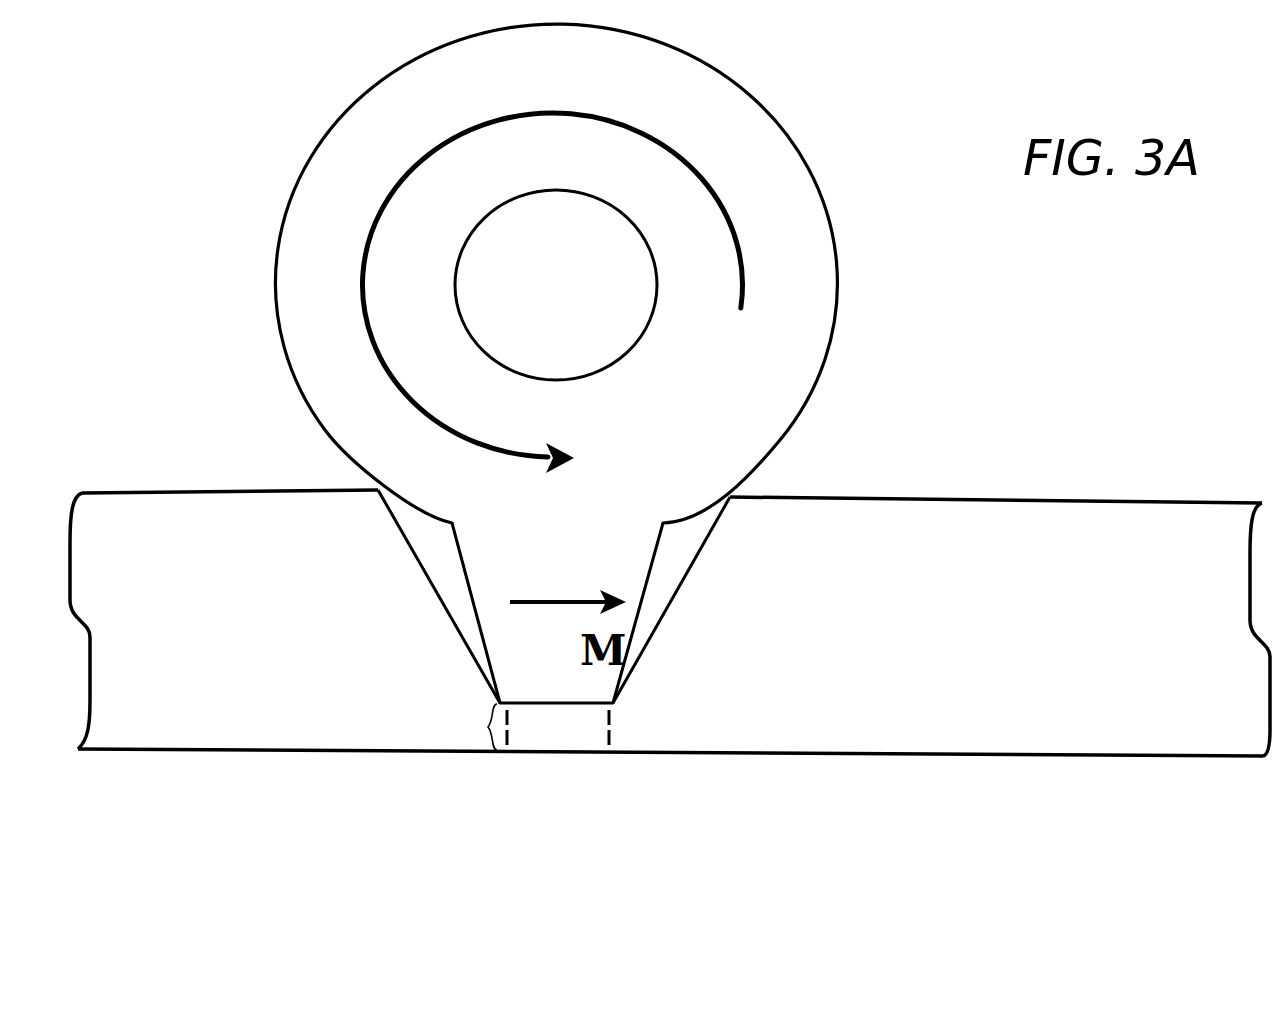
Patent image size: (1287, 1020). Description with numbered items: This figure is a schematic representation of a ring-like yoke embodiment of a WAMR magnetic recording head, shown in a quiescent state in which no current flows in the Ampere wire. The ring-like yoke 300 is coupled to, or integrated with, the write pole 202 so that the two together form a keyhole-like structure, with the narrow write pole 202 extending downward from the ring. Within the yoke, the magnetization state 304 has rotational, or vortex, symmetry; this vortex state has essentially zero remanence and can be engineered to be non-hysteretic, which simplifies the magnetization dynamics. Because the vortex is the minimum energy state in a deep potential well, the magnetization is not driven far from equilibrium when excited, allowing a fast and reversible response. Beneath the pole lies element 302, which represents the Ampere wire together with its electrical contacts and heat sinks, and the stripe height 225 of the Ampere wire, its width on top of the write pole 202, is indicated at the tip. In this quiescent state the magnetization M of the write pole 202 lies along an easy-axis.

The ring-like yoke 300 is at (710, 95).
The magnetization state 304 is at (405, 170).
The ampere wire and electrical contacts/heat sinks 302 is at (853, 653).
The write pole 202 is at (547, 683).
The stripe height 225 is at (478, 731).